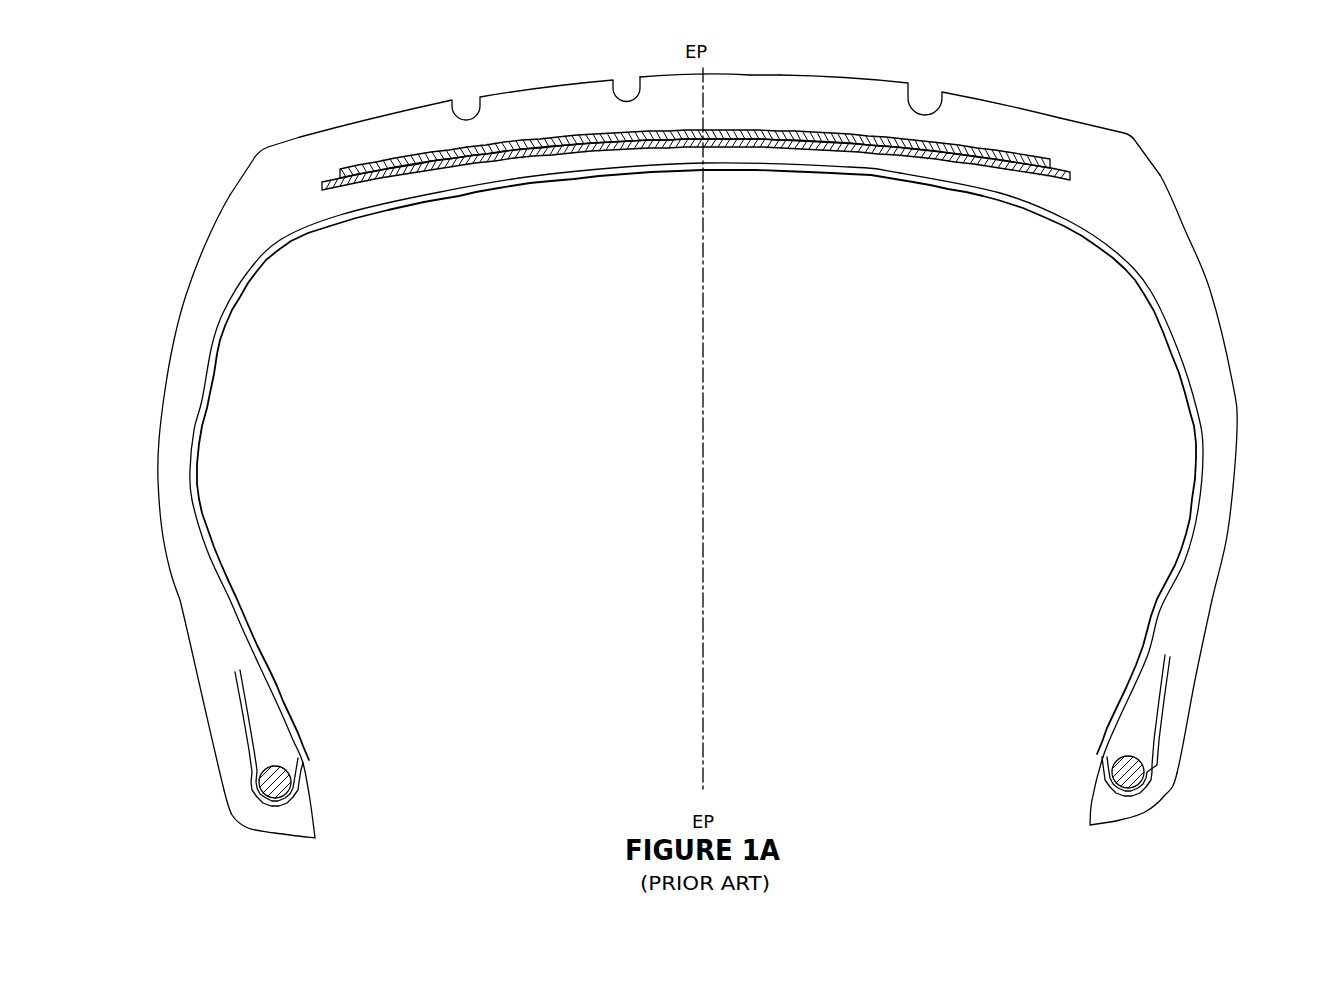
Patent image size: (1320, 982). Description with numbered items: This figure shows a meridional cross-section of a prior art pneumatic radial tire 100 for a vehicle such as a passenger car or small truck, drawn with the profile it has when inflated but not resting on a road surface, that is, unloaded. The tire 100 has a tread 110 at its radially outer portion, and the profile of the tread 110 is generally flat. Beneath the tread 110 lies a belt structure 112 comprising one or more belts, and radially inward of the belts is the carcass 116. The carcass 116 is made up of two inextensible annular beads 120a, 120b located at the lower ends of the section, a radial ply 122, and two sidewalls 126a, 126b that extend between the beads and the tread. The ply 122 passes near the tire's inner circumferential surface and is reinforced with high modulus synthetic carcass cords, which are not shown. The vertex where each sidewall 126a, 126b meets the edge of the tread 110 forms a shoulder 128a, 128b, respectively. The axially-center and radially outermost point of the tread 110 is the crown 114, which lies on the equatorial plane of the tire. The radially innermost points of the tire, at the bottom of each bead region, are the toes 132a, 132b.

The pneumatic radial tire 100 is at (1108, 81).
The tread 110 is at (900, 85).
The belt structure 112 is at (795, 130).
The crown 114 is at (705, 73).
The carcass 116 is at (767, 172).
The bead 120a is at (1118, 764).
The bead 120b is at (283, 778).
The radial ply 122 is at (1195, 502).
The sidewall 126a is at (1238, 423).
The sidewall 126b is at (160, 478).
The shoulder 128a is at (1131, 136).
The shoulder 128b is at (261, 152).
The toe 132a is at (1090, 826).
The toe 132b is at (315, 838).